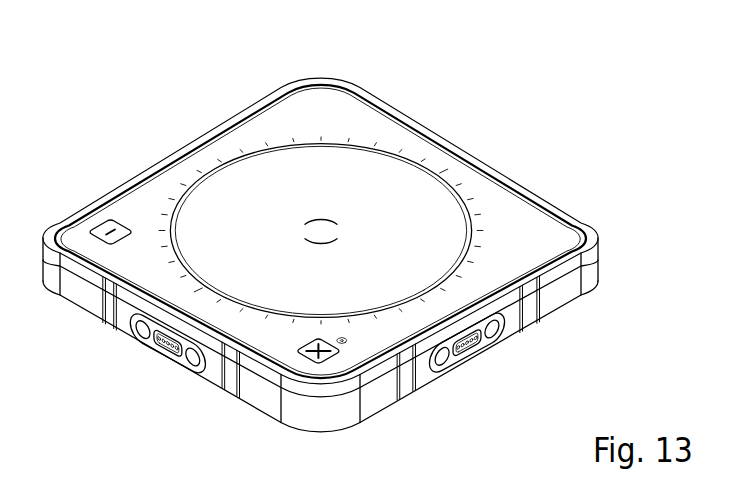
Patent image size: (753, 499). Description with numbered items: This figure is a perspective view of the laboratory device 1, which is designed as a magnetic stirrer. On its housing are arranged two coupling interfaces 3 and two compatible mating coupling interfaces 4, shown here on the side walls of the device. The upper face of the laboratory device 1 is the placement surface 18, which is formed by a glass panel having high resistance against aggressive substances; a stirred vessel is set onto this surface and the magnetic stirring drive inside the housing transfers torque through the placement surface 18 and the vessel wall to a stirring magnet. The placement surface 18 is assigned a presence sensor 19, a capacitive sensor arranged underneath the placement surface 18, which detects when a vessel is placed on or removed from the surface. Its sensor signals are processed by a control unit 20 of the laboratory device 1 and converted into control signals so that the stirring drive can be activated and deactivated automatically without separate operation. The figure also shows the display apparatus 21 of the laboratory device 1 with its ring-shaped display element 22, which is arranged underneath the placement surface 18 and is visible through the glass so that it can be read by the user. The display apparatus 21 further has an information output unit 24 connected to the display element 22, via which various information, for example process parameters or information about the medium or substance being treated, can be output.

The laboratory device 1 is at (204, 83).
The coupling interface 3 is at (128, 131).
The mating coupling interface 4 is at (518, 111).
The placement surface 18 is at (568, 222).
The presence sensor 19 is at (323, 230).
The control unit 20 is at (296, 110).
The display apparatus 21 is at (435, 172).
The ring-shaped display element 22 is at (468, 244).
The information output unit 24 is at (173, 175).